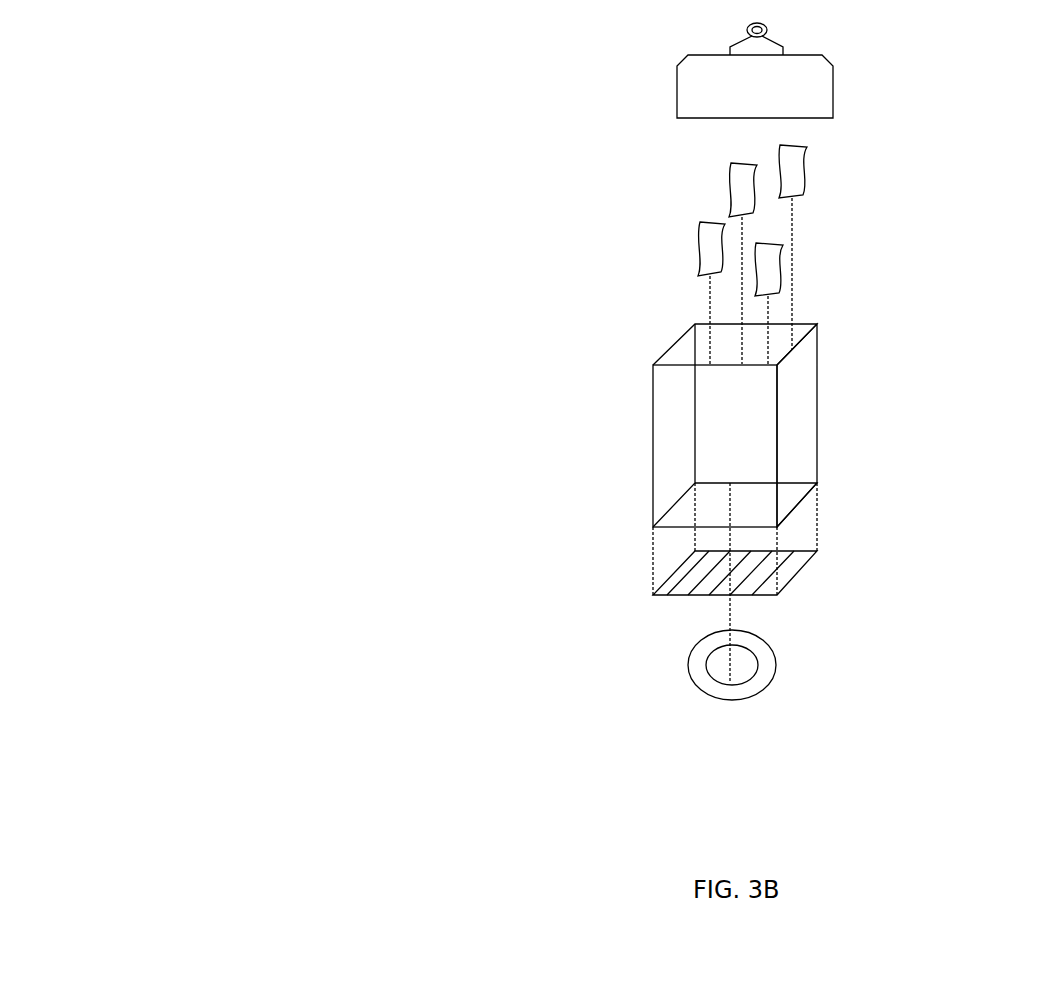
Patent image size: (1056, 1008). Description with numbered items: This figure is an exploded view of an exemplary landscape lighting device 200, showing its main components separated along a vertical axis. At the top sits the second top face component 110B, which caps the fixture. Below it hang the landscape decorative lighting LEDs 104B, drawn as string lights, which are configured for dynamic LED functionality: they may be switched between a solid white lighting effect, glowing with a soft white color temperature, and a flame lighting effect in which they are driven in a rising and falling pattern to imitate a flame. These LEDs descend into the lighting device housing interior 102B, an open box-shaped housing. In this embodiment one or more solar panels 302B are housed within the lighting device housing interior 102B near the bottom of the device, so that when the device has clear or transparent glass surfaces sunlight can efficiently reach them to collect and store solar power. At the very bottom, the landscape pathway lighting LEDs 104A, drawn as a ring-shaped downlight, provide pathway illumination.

The landscape lighting device 200 is at (110, 93).
The second top face component 110B is at (839, 111).
The landscape decorative lighting LEDs 104B is at (697, 244).
The lighting device housing interior 102B is at (764, 423).
The solar panels 302B is at (689, 587).
The landscape pathway lighting LEDs 104A is at (733, 702).